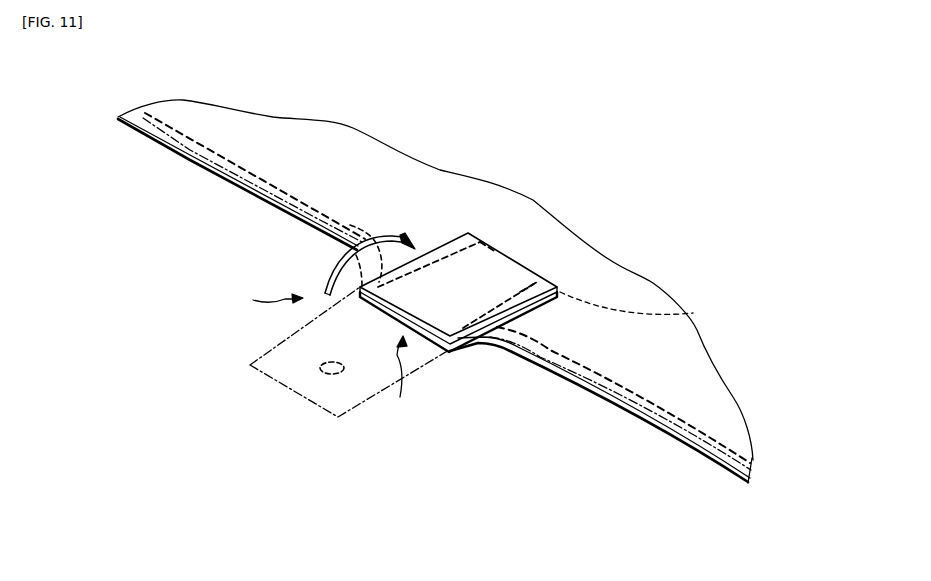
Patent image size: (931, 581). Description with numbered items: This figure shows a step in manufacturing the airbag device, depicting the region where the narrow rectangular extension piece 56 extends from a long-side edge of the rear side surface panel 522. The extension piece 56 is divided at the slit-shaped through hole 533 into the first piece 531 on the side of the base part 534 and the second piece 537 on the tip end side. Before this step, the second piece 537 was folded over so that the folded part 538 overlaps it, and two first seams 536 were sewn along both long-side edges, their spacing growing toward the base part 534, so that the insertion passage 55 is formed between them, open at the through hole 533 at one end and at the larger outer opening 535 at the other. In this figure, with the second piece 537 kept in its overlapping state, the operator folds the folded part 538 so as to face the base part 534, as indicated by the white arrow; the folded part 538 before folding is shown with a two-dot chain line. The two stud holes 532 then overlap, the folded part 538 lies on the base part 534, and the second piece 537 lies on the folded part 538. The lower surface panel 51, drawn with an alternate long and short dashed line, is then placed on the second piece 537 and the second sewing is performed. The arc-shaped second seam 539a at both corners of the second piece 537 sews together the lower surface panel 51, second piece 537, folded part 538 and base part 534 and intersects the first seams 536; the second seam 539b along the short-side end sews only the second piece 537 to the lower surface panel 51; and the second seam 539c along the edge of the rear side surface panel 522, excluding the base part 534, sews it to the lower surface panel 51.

The lower surface panel 51 is at (667, 438).
The rear side surface panel 522 is at (710, 466).
The first piece 531 is at (414, 301).
The stud holes 532 is at (341, 373).
The through hole 533 is at (522, 267).
The base part 534 is at (507, 350).
The outer opening 535 is at (398, 381).
The first seams 536 is at (520, 275).
The second piece 537 is at (448, 245).
The folded part 538 is at (388, 370).
The second seam 539a is at (365, 265).
The second seam 539b is at (380, 318).
The second seam 539c is at (207, 147).
The insertion passage 55 is at (435, 280).
The extension piece 56 is at (260, 302).